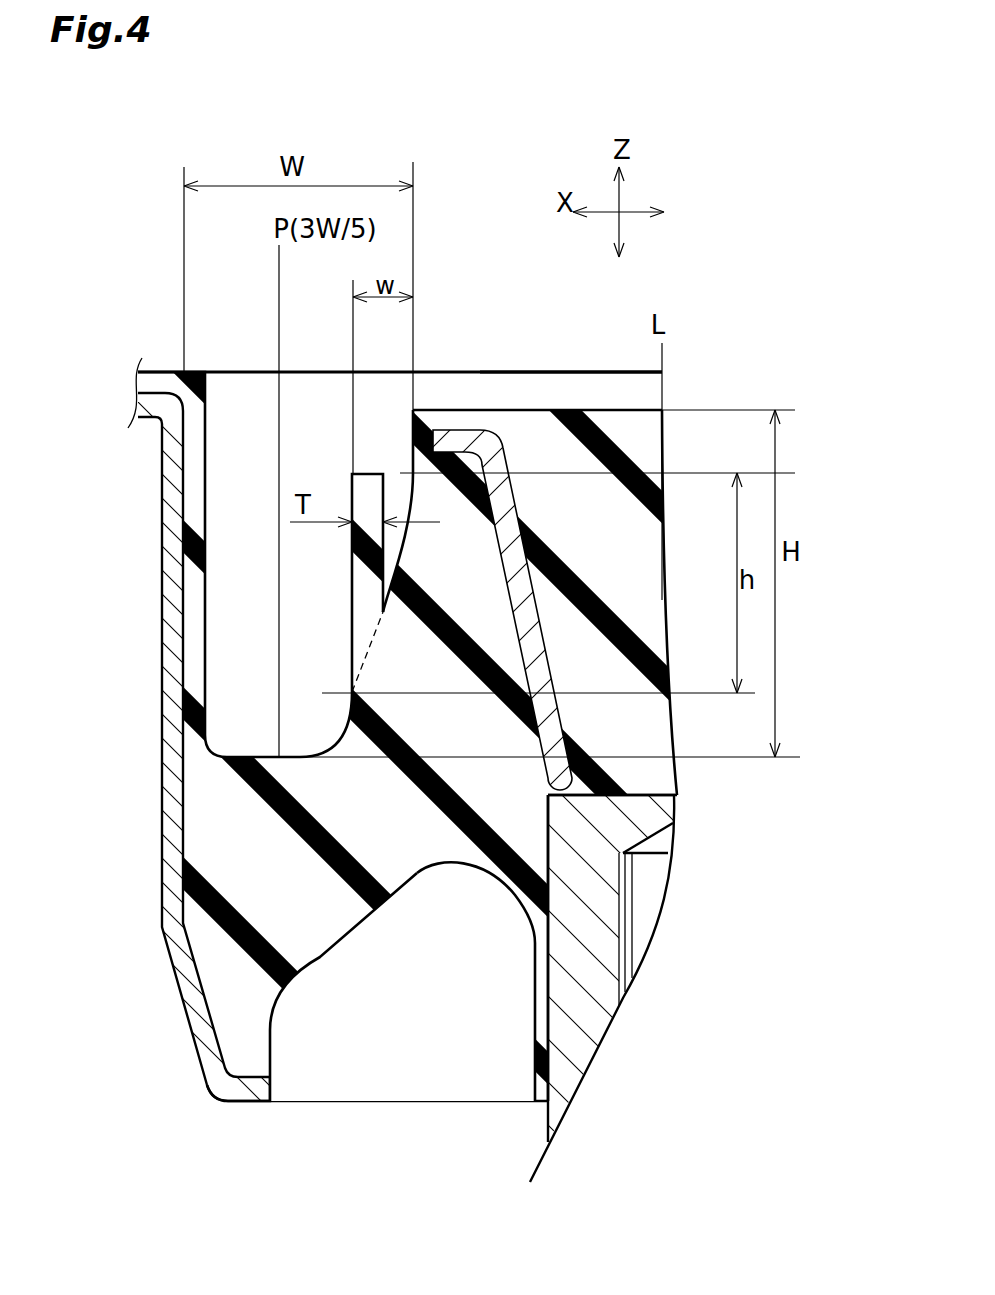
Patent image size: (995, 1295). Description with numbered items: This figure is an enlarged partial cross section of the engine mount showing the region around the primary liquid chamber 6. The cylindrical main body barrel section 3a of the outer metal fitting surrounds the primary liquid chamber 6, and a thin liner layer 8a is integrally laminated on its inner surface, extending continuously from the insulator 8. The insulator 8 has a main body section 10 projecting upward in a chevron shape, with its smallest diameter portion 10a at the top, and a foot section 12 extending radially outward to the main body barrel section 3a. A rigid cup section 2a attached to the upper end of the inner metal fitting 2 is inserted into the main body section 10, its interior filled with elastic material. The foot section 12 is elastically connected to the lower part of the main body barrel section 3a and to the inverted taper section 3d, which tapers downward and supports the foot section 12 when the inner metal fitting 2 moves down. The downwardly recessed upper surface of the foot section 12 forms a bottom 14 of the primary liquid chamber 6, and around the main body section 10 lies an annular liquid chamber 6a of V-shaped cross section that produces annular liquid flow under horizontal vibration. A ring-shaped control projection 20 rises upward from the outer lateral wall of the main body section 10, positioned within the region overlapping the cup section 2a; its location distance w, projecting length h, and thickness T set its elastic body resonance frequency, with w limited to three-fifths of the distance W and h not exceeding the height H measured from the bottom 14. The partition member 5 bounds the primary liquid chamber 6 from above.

The inner metal fitting 2 is at (586, 950).
The cup section 2a is at (553, 662).
The main body barrel section 3a is at (165, 812).
The inverted taper section 3d is at (190, 1010).
The partition member 5 is at (563, 372).
The primary liquid chamber 6 is at (647, 390).
The annular liquid chamber 6a is at (235, 620).
The insulator 8 is at (320, 957).
The liner layer 8a is at (207, 424).
The main body section 10 is at (647, 440).
The smallest diameter portion 10a is at (405, 424).
The foot section 12 is at (413, 862).
The bottom 14 is at (264, 757).
The control projection 20 is at (350, 597).